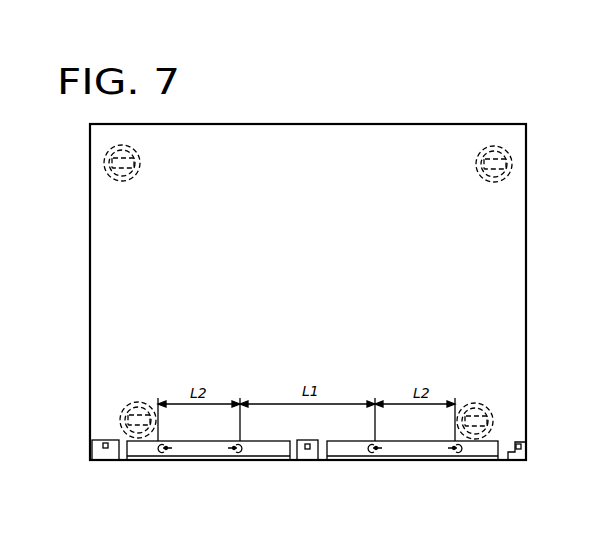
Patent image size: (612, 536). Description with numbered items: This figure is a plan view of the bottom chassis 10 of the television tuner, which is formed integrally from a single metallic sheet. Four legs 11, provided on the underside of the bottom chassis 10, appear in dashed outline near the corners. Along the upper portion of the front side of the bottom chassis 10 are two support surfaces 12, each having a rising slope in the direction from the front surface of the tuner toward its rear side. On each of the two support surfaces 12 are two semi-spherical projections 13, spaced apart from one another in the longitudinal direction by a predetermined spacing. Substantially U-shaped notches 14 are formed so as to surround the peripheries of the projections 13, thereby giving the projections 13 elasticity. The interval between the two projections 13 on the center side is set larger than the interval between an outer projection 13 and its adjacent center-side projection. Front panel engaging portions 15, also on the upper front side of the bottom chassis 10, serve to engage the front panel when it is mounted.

The bottom chassis 10 is at (335, 147).
The legs 11 is at (107, 180).
The support surfaces 12 is at (135, 450).
The projections 13 is at (166, 448).
The notches 14 is at (160, 452).
The front panel engaging portions 15 is at (106, 454).